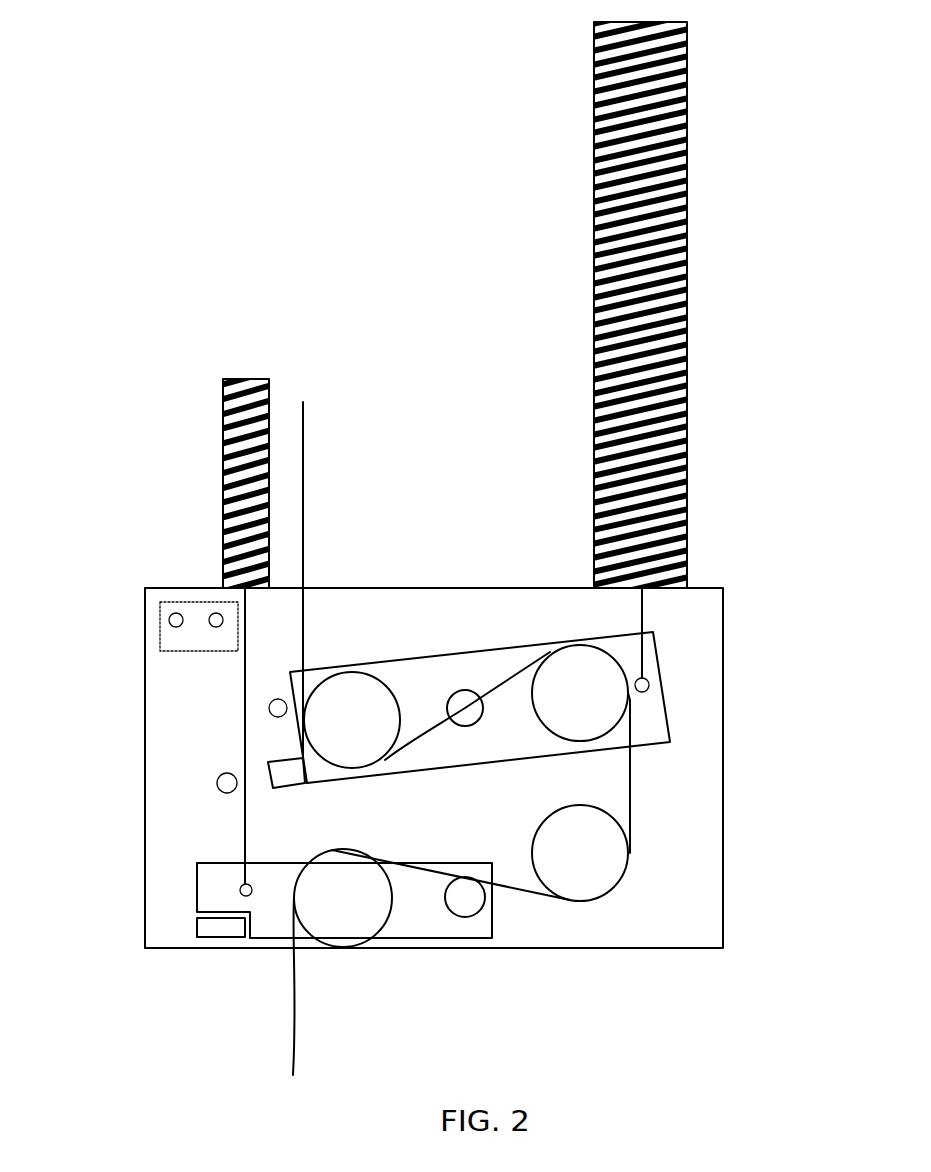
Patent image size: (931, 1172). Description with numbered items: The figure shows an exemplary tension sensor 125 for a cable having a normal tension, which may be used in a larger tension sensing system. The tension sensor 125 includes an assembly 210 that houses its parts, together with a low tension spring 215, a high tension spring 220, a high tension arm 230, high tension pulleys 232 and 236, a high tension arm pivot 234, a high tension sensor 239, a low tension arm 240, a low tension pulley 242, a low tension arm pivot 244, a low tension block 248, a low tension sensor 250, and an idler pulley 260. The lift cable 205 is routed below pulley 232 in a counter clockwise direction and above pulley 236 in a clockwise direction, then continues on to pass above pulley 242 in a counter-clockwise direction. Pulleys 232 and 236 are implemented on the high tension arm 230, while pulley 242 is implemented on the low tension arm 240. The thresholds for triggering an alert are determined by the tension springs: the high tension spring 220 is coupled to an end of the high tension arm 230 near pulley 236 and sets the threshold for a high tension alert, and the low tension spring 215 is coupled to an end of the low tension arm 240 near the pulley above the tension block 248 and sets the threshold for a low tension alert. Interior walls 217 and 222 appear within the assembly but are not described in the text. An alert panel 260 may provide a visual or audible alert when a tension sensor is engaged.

The tension sensor 125 is at (293, 133).
The lift cable 205 is at (304, 503).
The assembly 210 is at (721, 900).
The low tension spring 215 is at (222, 458).
The partition wall 217 is at (244, 693).
The high tension spring 220 is at (689, 440).
The partition wall 222 is at (709, 626).
The high tension arm 230 is at (650, 734).
The high tension pulley 232 is at (377, 645).
The high tension arm pivot 234 is at (464, 703).
The high tension pulley 236 is at (573, 652).
The high tension sensor 239 is at (277, 698).
The low tension arm 240 is at (220, 875).
The low tension pulley 242 is at (422, 844).
The low tension arm pivot 244 is at (478, 906).
The low tension block 248 is at (197, 927).
The low tension sensor 250 is at (219, 778).
The idler pulley 260 is at (160, 639).